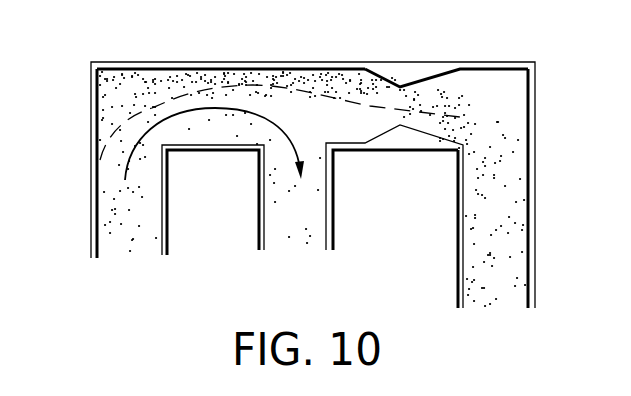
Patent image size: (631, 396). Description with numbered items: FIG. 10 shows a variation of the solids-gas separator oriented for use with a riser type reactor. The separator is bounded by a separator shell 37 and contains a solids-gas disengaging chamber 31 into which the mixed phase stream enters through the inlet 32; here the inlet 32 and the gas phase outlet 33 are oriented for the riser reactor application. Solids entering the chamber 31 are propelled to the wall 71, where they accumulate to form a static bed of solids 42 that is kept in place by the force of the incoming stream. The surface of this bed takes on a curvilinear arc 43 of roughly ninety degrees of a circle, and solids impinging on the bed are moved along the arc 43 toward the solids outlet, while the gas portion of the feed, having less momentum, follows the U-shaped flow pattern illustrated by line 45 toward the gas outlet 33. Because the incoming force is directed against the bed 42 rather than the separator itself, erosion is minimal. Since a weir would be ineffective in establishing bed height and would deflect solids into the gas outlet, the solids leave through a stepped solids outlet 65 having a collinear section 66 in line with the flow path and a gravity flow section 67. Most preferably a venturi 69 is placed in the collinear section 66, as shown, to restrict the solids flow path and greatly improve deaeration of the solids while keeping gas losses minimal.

The solids-gas disengaging chamber 31 is at (208, 138).
The inlet 32 is at (128, 257).
The gas phase outlet 33 is at (298, 243).
The separator shell 37 is at (298, 67).
The static bed of solids 42 is at (120, 87).
The curvilinear arc 43 is at (180, 92).
The U-shaped gas flow pattern line 45 is at (288, 148).
The stepped solids outlet 65 is at (507, 103).
The collinear section 66 is at (355, 117).
The gravity flow section 67 is at (503, 228).
The venturi 69 is at (405, 75).
The wall 71 is at (220, 70).